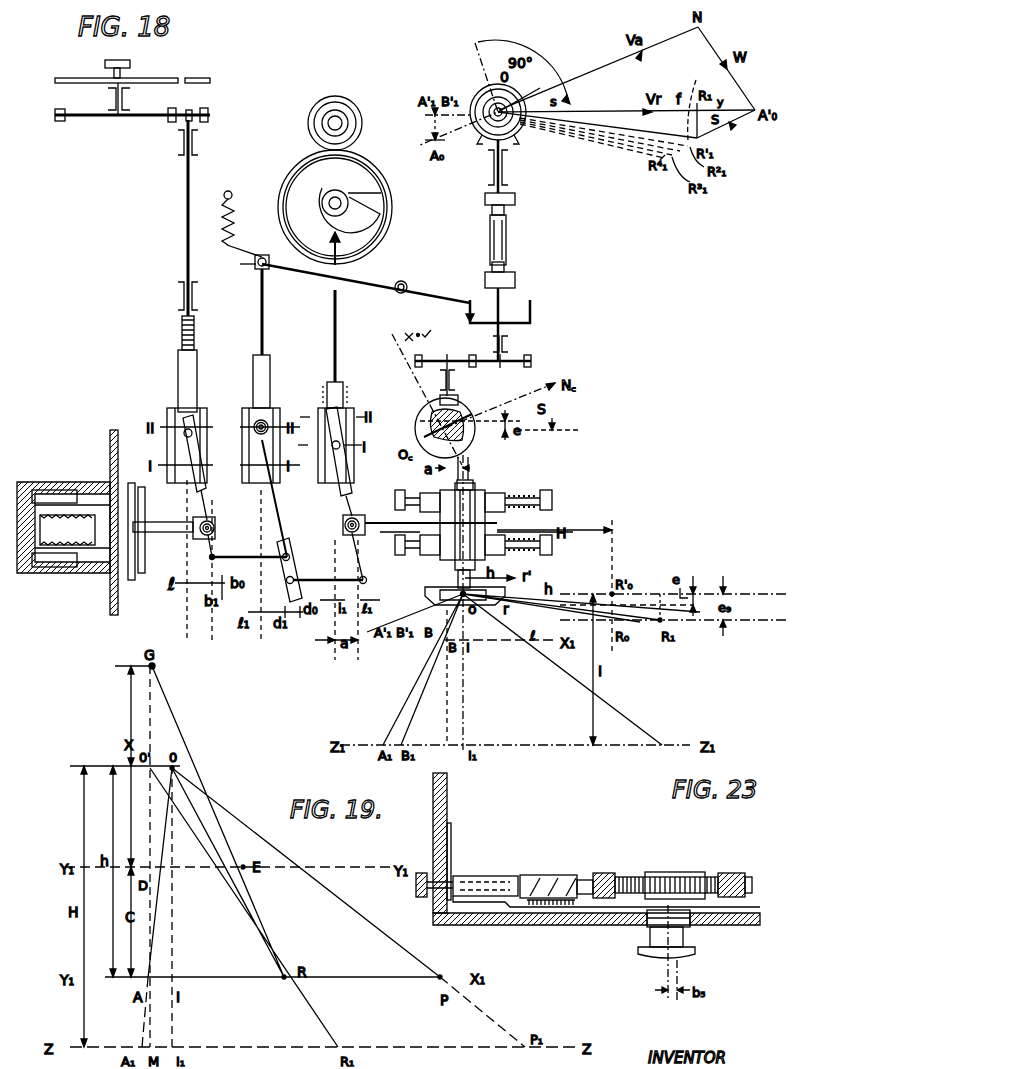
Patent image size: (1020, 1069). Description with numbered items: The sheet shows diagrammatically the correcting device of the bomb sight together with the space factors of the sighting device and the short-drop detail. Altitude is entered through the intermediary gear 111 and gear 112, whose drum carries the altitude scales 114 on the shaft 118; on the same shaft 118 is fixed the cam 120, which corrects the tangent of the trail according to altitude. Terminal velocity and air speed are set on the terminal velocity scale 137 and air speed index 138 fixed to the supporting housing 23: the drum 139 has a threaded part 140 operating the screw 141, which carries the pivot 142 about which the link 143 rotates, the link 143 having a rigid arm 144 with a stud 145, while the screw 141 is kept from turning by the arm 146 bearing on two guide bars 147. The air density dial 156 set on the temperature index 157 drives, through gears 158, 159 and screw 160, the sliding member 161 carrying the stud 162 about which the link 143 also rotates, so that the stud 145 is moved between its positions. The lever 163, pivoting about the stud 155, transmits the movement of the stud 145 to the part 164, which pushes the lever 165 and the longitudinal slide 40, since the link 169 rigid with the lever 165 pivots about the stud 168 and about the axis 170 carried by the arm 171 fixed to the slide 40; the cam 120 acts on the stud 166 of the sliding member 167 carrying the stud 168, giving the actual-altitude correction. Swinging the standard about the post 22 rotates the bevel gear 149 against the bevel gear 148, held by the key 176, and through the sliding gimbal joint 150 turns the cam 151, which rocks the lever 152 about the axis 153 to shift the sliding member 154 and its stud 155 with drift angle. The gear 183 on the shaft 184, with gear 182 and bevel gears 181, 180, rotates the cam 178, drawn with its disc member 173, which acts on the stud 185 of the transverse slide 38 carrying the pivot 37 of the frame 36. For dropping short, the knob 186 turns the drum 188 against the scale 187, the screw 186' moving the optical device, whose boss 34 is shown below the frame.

In FIG. 18, the post 22 is at (480, 141).
In FIG. 23, the supporting housing 23 is at (488, 928).
In FIG. 23, the pivot boss 34 is at (683, 930).
In FIG. 18, the frame 36 is at (427, 609).
In FIG. 18, the pivot 37 is at (501, 588).
In FIG. 23, the pivot 37 is at (666, 873).
In FIG. 18, the transverse slide 38 is at (478, 490).
In FIG. 18, the longitudinal slide 40 is at (437, 550).
In FIG. 18, the intermediary gear 111 is at (356, 101).
In FIG. 18, the gear 112 is at (346, 160).
In FIG. 18, the altitude scales 114 is at (383, 174).
In FIG. 18, the shaft 118 is at (348, 197).
In FIG. 18, the cam 120 is at (378, 215).
In FIG. 18, the terminal velocity scale 137 is at (56, 574).
In FIG. 18, the air speed index 138 is at (50, 485).
In FIG. 18, the drum 139 is at (30, 575).
In FIG. 18, the threaded part 140 is at (30, 528).
In FIG. 18, the screw 141 is at (91, 528).
In FIG. 18, the pivot 142 is at (213, 526).
In FIG. 18, the link 143 is at (203, 472).
In FIG. 18, the arm 144 is at (215, 556).
In FIG. 18, the stud 145 is at (241, 588).
In FIG. 18, the arm 146 is at (145, 526).
In FIG. 18, the guide bars 147 is at (136, 582).
In FIG. 18, the bevel gear 148 is at (476, 93).
In FIG. 18, the bevel gear 149 is at (514, 142).
In FIG. 18, the sliding gimbal joint 150 is at (508, 226).
In FIG. 18, the cam 151 is at (532, 309).
In FIG. 18, the lever 152 is at (371, 284).
In FIG. 18, the axis 153 is at (399, 298).
In FIG. 18, the sliding member 154 is at (270, 410).
In FIG. 18, the stud 155 is at (253, 427).
In FIG. 18, the air density dial 156 is at (88, 62).
In FIG. 18, the temperature index 157 is at (203, 78).
In FIG. 18, the gear 158 is at (150, 117).
In FIG. 18, the gear 159 is at (209, 117).
In FIG. 18, the screw 160 is at (194, 333).
In FIG. 18, the sliding member 161 is at (196, 395).
In FIG. 18, the stud 162 is at (174, 427).
In FIG. 18, the lever 163 is at (280, 501).
In FIG. 18, the lever part 164 is at (324, 569).
In FIG. 18, the lever 165 is at (366, 578).
In FIG. 18, the stud 166 is at (335, 302).
In FIG. 18, the sliding member 167 is at (349, 400).
In FIG. 18, the stud 168 is at (344, 438).
In FIG. 18, the link 169 is at (350, 484).
In FIG. 18, the axis 170 is at (354, 516).
In FIG. 18, the arm 171 is at (381, 538).
In FIG. 18, the rotor disc 173 is at (424, 433).
In FIG. 18, the key 176 is at (530, 93).
In FIG. 18, the cam 178 is at (476, 446).
In FIG. 18, the bevel gear 180 is at (424, 457).
In FIG. 18, the bevel gear 181 is at (461, 399).
In FIG. 18, the gear 182 is at (470, 341).
In FIG. 18, the gear 183 is at (528, 359).
In FIG. 18, the shaft 184 is at (508, 300).
In FIG. 18, the stud 185 is at (466, 470).
In FIG. 23, the knob 186 is at (416, 895).
In FIG. 23, the screw 186' is at (667, 871).
In FIG. 23, the scale 187 is at (550, 906).
In FIG. 23, the drum 188 is at (548, 875).